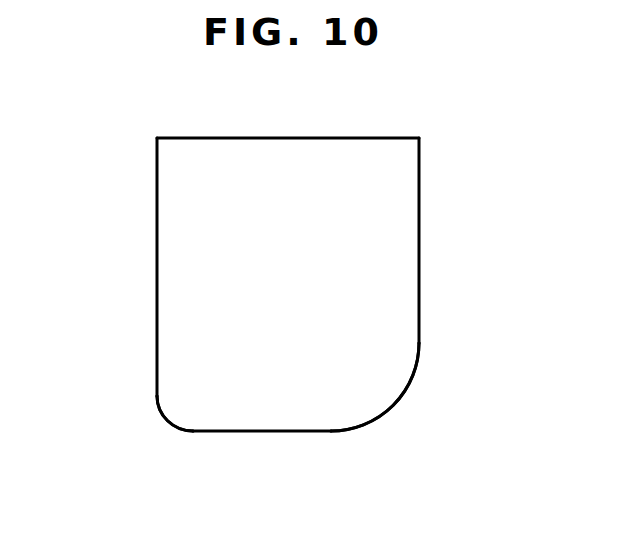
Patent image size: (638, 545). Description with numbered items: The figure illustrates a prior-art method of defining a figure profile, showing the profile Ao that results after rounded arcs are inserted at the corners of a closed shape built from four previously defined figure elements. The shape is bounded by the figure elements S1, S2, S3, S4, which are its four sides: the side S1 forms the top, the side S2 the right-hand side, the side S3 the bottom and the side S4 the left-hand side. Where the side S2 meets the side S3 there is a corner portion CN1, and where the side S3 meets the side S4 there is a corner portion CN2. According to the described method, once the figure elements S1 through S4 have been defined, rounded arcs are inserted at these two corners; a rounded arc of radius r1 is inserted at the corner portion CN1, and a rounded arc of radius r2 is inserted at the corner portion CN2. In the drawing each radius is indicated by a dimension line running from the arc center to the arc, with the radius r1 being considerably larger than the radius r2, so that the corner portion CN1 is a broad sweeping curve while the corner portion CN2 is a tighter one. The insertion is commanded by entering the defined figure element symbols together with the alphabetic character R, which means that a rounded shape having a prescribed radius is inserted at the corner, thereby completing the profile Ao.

The profile Ao is at (398, 136).
The figure element S1 is at (236, 137).
The figure element S2 is at (419, 277).
The figure element S3 is at (287, 434).
The figure element S4 is at (157, 284).
The corner portion CN1 is at (407, 409).
The corner portion CN2 is at (163, 420).
The radius r1 is at (377, 418).
The radius r2 is at (168, 422).